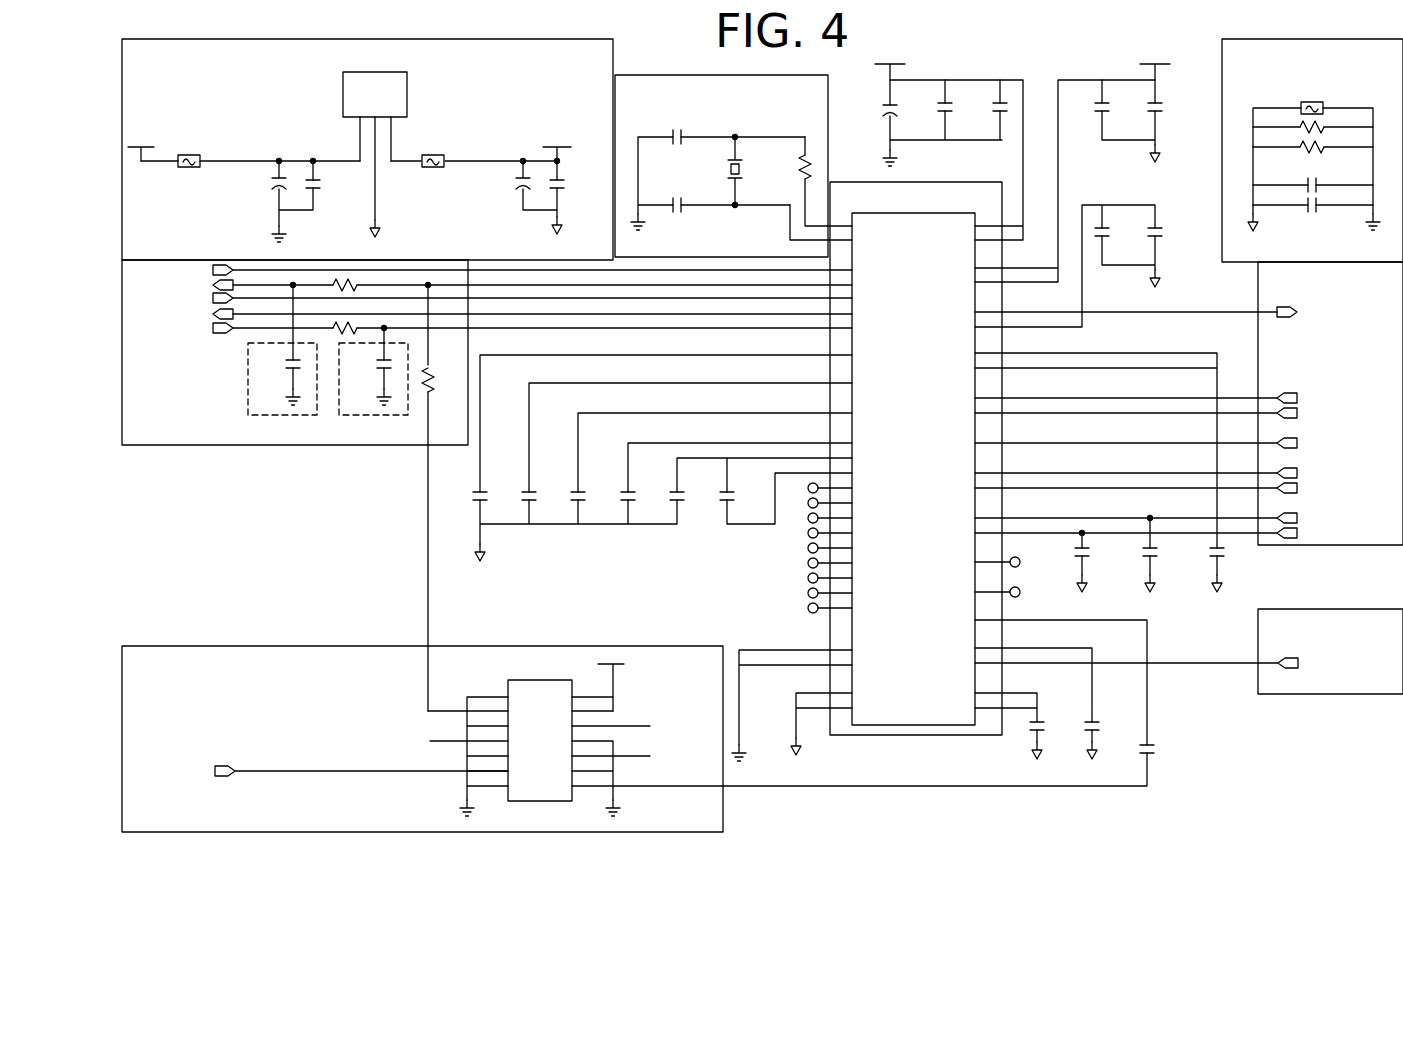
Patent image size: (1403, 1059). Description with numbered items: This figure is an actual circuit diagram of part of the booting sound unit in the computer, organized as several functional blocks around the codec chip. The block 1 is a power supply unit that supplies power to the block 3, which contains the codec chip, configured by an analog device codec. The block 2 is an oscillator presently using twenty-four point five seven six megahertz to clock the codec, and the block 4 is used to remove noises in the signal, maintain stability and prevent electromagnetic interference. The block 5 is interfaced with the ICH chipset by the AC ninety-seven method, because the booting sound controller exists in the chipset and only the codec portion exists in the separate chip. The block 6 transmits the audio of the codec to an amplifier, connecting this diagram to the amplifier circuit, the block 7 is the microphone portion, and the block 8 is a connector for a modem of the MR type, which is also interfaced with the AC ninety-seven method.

The power supply unit block 1 is at (367, 149).
The oscillator block 2 is at (733, 166).
The codec block 3 is at (871, 418).
The noise removal block 4 is at (1312, 150).
The AC97 interface block 5 is at (487, 485).
The audio output block 6 is at (1330, 403).
The microphone portion block 7 is at (1330, 651).
The modem connector block 8 is at (422, 739).